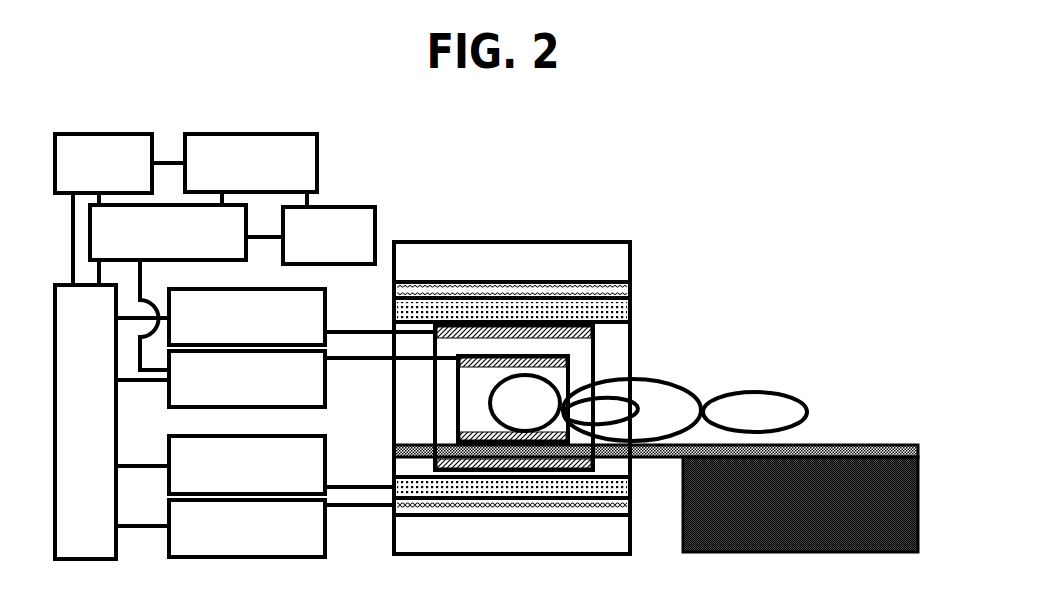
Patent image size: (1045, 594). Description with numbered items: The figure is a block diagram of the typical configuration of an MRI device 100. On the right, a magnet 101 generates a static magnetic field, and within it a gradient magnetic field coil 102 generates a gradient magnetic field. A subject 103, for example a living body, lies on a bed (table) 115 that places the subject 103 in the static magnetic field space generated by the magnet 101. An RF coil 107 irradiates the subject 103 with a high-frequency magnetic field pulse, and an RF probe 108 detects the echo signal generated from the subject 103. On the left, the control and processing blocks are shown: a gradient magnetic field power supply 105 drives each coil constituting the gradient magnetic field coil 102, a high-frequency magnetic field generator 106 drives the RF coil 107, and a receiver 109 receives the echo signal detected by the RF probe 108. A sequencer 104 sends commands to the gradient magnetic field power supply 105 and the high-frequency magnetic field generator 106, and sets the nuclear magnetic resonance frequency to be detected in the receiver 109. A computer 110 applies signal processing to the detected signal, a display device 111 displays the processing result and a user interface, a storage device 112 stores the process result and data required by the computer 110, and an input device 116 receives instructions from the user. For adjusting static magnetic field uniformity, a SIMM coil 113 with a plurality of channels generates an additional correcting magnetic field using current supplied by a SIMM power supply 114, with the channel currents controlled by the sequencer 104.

The MRI device 100 is at (387, 180).
The magnet 101 is at (523, 257).
The gradient magnetic field coil 102 is at (565, 288).
The subject 103 is at (762, 408).
The sequencer 104 is at (112, 422).
The gradient magnetic field power supply 105 is at (281, 528).
The high-frequency magnetic field generator 106 is at (302, 317).
The RF coil 107 is at (593, 330).
The RF probe 108 is at (553, 368).
The receiver 109 is at (313, 379).
The computer 110 is at (186, 287).
The display device 111 is at (251, 170).
The storage device 112 is at (120, 209).
The SIMM coil 113 is at (580, 334).
The SIMM power supply 114 is at (281, 465).
The bed (table) 115 is at (833, 445).
The input device 116 is at (329, 235).